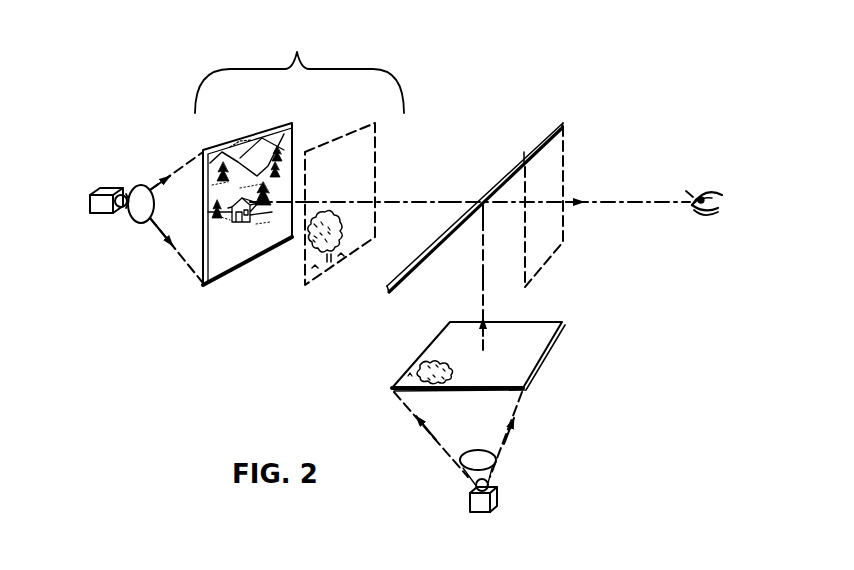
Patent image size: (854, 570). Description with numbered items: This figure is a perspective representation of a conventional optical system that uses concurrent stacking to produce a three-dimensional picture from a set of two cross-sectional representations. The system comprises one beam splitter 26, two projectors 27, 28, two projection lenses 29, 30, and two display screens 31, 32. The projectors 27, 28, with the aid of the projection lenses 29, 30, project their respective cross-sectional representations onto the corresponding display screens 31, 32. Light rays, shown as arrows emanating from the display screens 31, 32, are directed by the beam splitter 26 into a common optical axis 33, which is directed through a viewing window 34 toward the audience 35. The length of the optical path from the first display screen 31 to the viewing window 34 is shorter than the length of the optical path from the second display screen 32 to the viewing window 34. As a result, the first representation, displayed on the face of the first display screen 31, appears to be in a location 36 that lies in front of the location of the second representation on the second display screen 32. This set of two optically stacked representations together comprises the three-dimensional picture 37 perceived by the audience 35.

The beam splitter 26 is at (537, 147).
The projector 27 is at (495, 495).
The projector 28 is at (103, 192).
The projection lens 29 is at (490, 462).
The projection lens 30 is at (140, 188).
The first display screen 31 is at (533, 346).
The second display screen 32 is at (228, 263).
The common optical axis 33 is at (635, 201).
The viewing window 34 is at (550, 166).
The audience 35 is at (719, 196).
The location of first representation 36 is at (348, 248).
The three-dimensional picture 37 is at (299, 68).